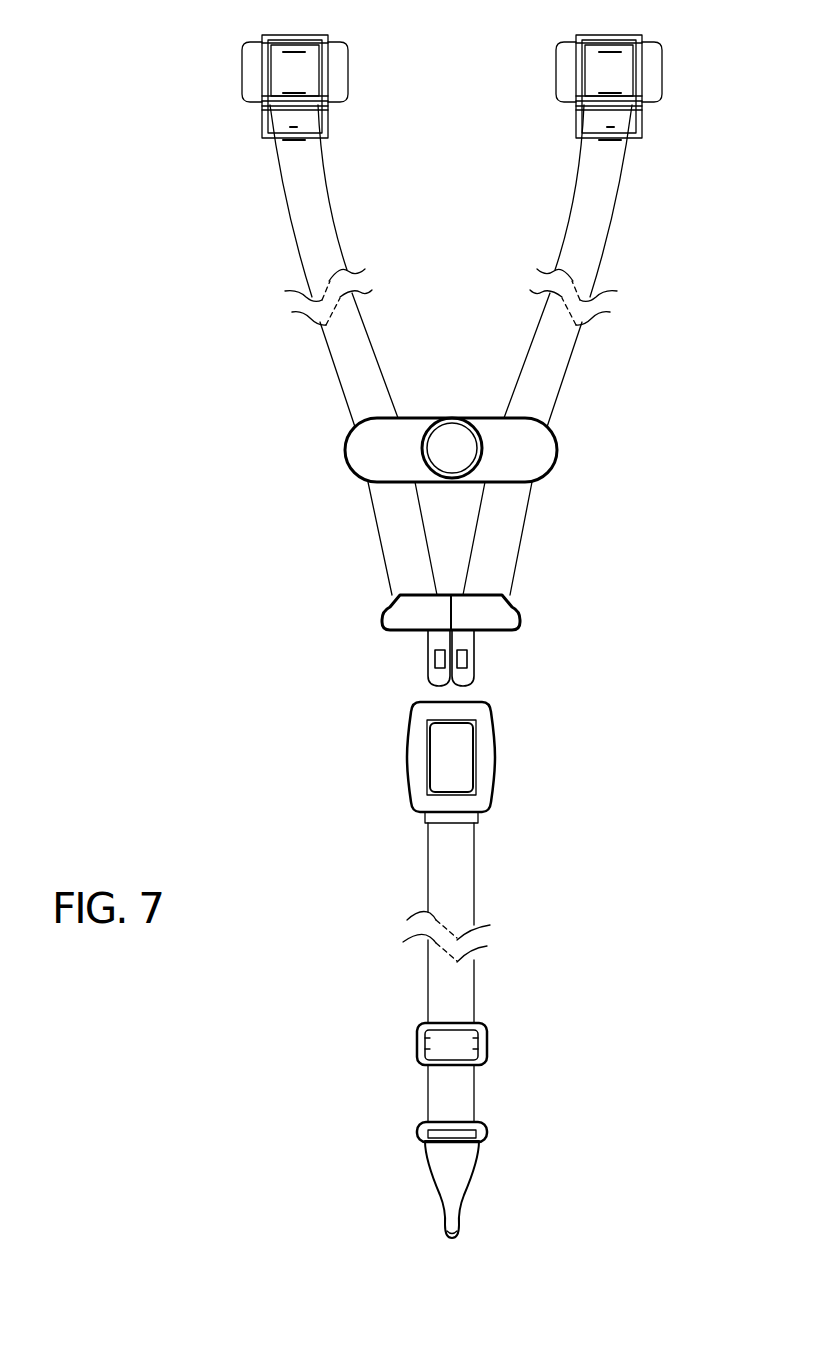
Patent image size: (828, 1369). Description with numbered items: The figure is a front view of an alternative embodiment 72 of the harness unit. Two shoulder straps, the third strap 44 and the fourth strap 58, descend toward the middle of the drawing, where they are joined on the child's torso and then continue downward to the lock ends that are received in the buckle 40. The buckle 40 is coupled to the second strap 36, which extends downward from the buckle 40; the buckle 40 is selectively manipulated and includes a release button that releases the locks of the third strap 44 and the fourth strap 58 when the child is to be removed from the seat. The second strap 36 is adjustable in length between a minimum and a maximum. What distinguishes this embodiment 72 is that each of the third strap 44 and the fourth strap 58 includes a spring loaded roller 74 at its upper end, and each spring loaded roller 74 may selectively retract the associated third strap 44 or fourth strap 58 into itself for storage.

The alternative embodiment 72 is at (450, 113).
The spring loaded roller 74 is at (266, 35).
The third strap 44 is at (383, 541).
The fourth strap 58 is at (522, 545).
The buckle 40 is at (488, 757).
The second strap 36 is at (428, 857).